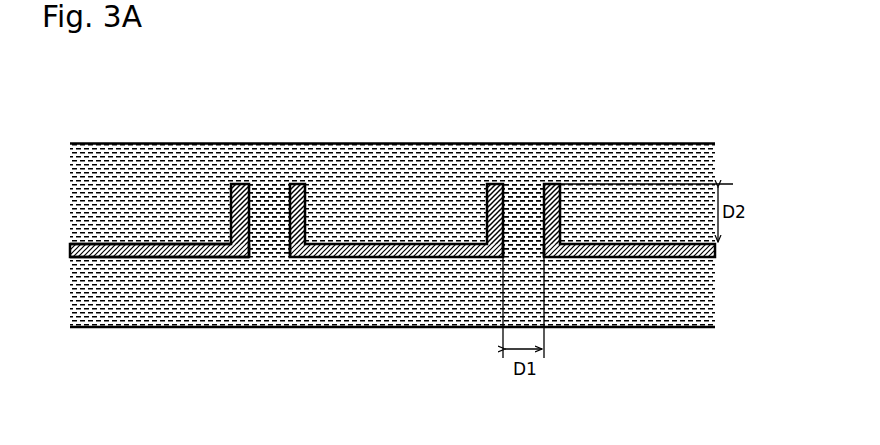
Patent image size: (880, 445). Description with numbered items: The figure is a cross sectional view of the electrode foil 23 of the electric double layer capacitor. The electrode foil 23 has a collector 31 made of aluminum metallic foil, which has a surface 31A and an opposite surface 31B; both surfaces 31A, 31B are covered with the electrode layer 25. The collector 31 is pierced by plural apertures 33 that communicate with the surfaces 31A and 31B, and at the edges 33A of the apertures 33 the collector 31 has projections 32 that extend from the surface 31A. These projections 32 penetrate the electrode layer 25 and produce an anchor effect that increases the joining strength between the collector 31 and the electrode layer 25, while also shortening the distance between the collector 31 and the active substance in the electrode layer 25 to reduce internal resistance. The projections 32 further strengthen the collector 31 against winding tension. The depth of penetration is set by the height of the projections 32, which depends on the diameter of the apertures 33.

The electrode foil 23 is at (392, 171).
The electrode layer 25 is at (659, 319).
The collector 31 is at (104, 246).
The surface 31A is at (185, 247).
The surface 31B is at (168, 257).
The projections 32 is at (240, 186).
The apertures 33 is at (265, 250).
The edges 33A is at (243, 258).